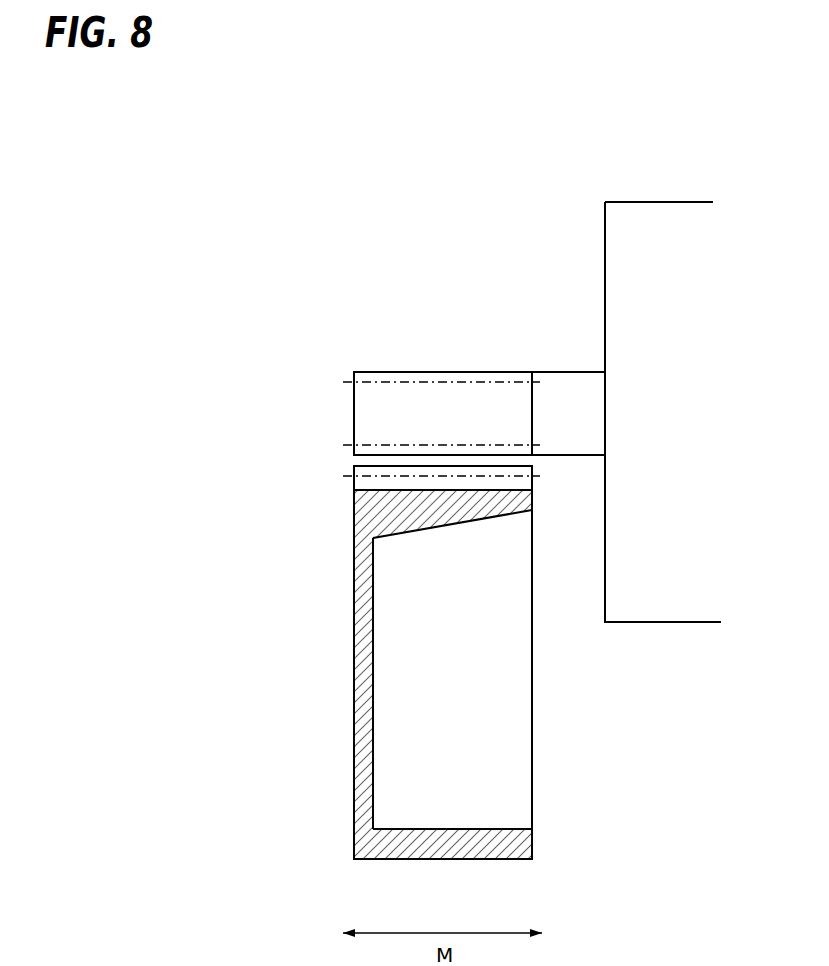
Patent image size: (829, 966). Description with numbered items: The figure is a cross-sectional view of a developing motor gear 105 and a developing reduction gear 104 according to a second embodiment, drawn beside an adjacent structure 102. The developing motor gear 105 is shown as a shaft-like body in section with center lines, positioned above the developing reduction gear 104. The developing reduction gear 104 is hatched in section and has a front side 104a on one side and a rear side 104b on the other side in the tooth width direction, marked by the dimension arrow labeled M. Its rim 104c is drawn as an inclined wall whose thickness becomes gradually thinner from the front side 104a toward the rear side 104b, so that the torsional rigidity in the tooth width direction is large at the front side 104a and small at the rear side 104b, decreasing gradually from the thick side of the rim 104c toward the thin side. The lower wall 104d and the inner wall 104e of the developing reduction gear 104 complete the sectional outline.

The housing / frame member 102 is at (605, 270).
The developing motor gear 105 is at (402, 372).
The developing reduction gear 104 is at (253, 617).
The front side 104a is at (354, 667).
The rear side 104b is at (532, 721).
The rim 104c is at (418, 530).
The bottom inner surface 104d is at (487, 829).
The inner side wall 104e is at (373, 744).